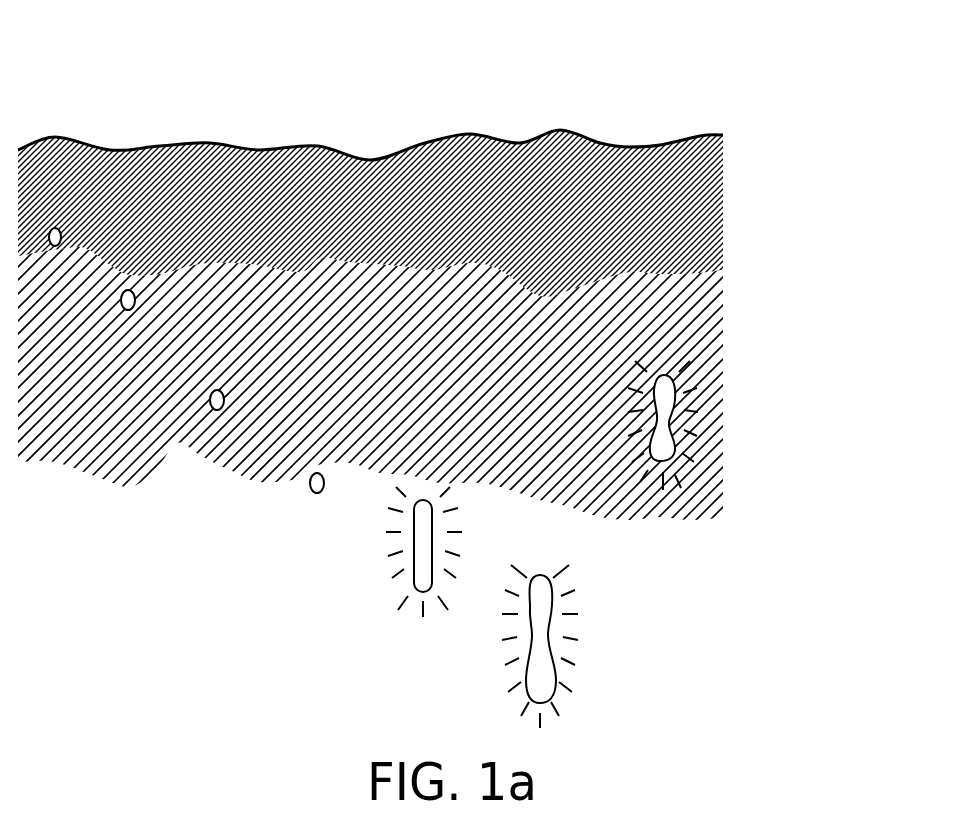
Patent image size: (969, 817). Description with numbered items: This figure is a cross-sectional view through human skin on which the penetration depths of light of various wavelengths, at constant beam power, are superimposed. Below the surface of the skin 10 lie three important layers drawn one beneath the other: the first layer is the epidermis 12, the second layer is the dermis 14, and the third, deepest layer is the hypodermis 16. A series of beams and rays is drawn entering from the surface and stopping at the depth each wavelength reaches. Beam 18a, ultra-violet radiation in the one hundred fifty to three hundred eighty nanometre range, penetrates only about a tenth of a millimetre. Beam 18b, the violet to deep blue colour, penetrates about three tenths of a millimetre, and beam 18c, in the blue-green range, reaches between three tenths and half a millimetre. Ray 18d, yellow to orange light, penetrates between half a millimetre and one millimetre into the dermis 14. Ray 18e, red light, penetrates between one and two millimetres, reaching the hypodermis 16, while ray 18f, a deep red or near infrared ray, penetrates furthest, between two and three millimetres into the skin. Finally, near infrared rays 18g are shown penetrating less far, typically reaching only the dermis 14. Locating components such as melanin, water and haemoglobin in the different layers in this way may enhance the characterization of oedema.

The surface of the skin 10 is at (707, 133).
The epidermis 12 is at (767, 135).
The dermis 14 is at (767, 277).
The hypodermis 16 is at (767, 458).
The beam 18a is at (55, 228).
The beam 18b is at (128, 290).
The beam 18c is at (217, 390).
The ray 18d is at (317, 473).
The ray 18e is at (423, 500).
The ray 18f is at (540, 575).
The near infrared rays 18g is at (663, 375).